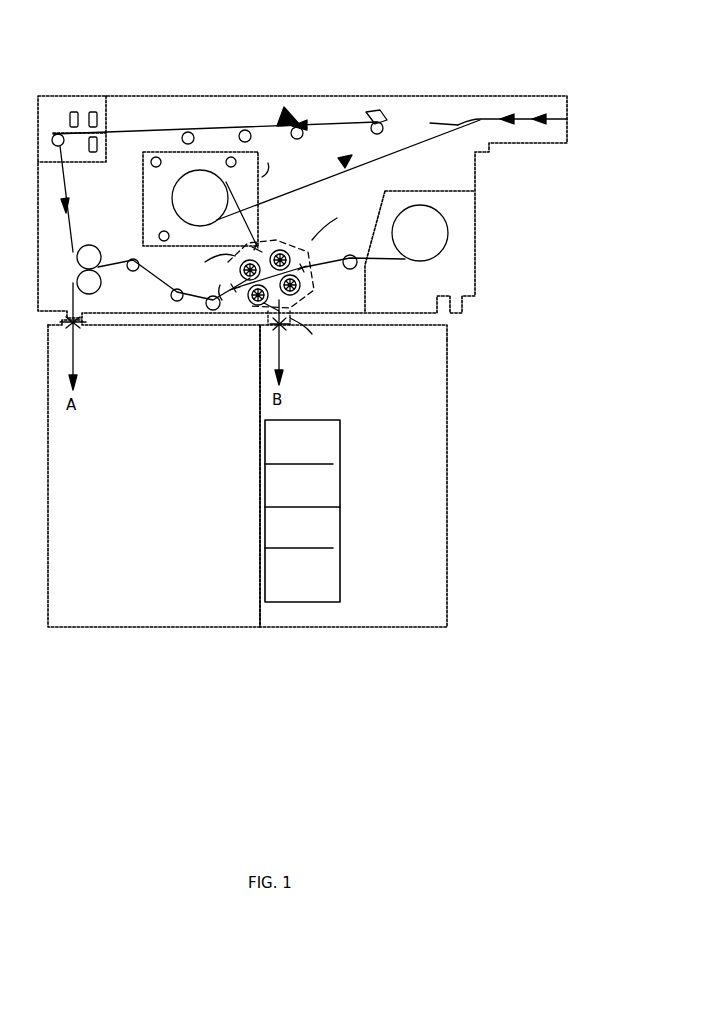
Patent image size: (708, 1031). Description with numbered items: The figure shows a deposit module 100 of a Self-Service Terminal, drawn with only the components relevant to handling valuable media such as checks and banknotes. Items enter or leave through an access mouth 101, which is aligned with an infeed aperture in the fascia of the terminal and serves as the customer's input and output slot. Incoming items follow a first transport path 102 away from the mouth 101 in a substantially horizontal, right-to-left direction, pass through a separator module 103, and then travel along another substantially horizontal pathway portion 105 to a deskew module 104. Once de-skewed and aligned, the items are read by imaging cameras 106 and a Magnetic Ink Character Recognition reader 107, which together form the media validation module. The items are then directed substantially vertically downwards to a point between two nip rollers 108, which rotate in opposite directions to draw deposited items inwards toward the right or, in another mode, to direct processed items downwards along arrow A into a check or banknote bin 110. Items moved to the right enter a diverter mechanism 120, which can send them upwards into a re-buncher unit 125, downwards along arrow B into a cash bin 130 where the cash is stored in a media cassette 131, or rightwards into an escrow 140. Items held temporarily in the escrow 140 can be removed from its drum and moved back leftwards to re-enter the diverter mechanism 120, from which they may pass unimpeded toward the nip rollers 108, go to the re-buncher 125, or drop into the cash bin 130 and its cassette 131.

The deposit module 100 is at (152, 96).
The access mouth 101 is at (582, 116).
The first transport path 102 is at (440, 120).
The separator module 103 is at (372, 110).
The deskew module 104 is at (284, 107).
The pathway portion 105 is at (212, 132).
The imaging cameras 106 is at (93, 110).
The Magnetic Ink Character Recognition reader 107 is at (74, 112).
The nip rollers 108 is at (88, 246).
The check or banknote bin 110 is at (154, 476).
The diverter mechanism 120 is at (308, 236).
The re-buncher unit 125 is at (348, 170).
The cash bin 130 is at (353, 476).
The media cassette 131 is at (316, 452).
The escrow 140 is at (472, 230).